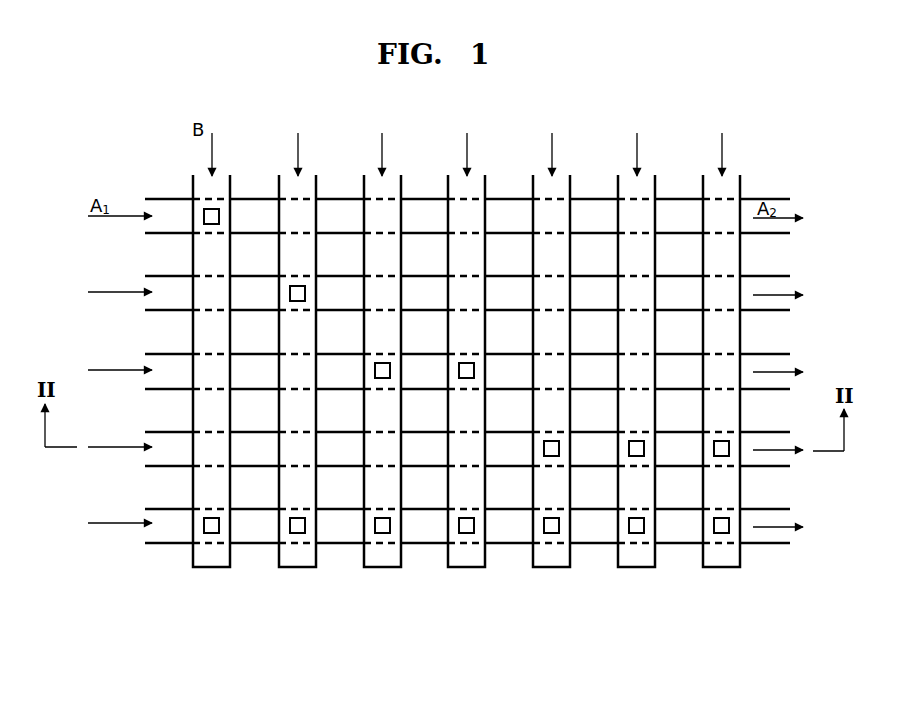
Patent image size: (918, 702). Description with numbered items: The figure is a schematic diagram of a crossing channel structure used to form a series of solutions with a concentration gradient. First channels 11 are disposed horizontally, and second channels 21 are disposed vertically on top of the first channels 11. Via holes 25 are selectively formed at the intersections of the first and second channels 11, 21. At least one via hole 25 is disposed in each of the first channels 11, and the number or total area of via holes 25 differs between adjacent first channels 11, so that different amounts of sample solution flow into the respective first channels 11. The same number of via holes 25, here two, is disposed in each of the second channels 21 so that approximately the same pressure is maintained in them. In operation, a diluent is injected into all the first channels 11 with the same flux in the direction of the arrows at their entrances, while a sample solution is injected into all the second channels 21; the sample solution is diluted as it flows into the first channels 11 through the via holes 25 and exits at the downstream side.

The first channels 11 is at (168, 206).
The second channels 21 is at (288, 198).
The via holes 25 is at (308, 292).